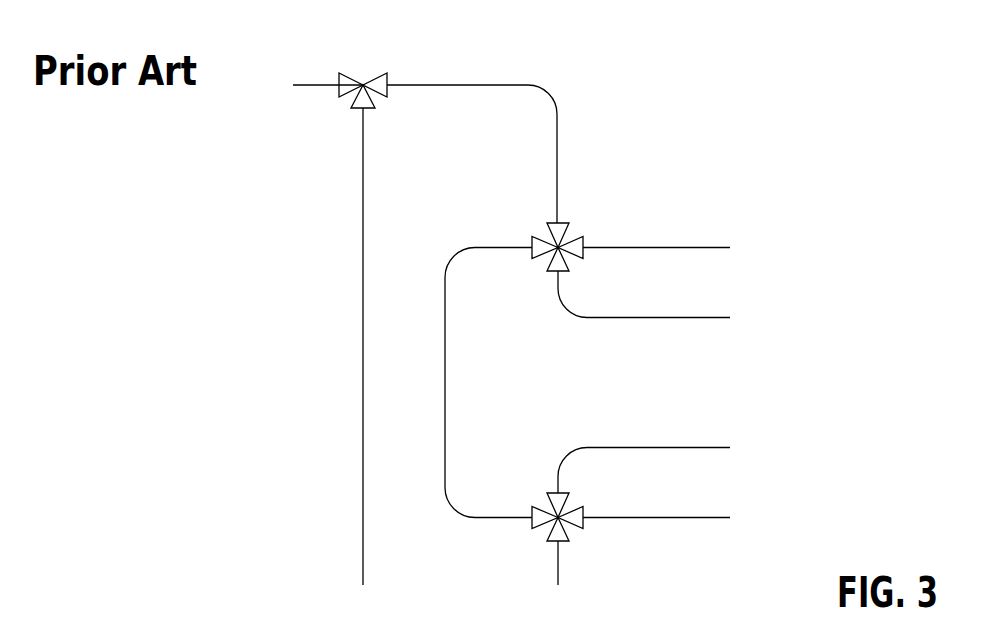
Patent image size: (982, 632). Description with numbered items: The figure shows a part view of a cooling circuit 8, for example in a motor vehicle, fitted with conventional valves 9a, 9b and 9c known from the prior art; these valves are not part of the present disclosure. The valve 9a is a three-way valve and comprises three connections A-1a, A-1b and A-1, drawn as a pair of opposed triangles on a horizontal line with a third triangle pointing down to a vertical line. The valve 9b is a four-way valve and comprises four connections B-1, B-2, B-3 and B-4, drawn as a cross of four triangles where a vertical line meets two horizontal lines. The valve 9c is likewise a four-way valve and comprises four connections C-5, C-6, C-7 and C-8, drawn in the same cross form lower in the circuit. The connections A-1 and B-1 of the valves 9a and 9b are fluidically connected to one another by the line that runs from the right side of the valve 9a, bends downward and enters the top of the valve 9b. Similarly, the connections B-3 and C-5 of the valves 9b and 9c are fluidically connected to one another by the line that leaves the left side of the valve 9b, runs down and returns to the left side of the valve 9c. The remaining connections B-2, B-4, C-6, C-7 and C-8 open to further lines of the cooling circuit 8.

The cooling circuit 8 is at (712, 140).
The valve 9a is at (386, 91).
The valve 9b is at (579, 242).
The valve 9c is at (596, 517).
The connection A-1 is at (360, 91).
The connection A-1a is at (338, 80).
The connection A-1b is at (356, 110).
The connection B-1 is at (560, 222).
The connection B-2 is at (548, 273).
The connection B-3 is at (530, 246).
The connection B-4 is at (584, 251).
The connection C-5 is at (532, 526).
The connection C-6 is at (584, 510).
The connection C-7 is at (563, 546).
The connection C-8 is at (553, 492).